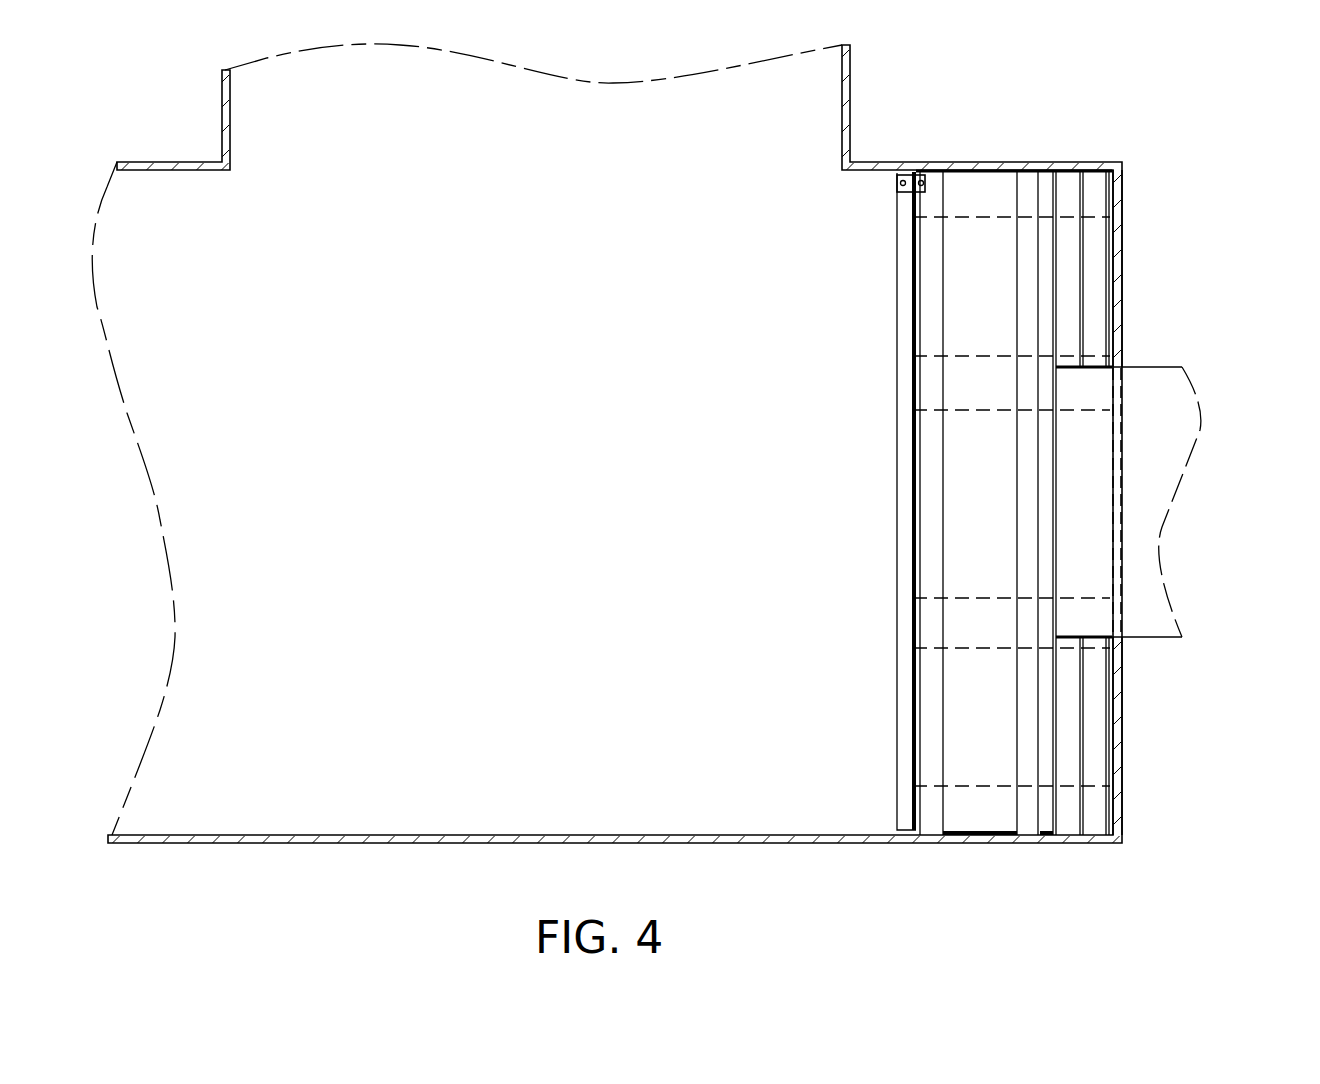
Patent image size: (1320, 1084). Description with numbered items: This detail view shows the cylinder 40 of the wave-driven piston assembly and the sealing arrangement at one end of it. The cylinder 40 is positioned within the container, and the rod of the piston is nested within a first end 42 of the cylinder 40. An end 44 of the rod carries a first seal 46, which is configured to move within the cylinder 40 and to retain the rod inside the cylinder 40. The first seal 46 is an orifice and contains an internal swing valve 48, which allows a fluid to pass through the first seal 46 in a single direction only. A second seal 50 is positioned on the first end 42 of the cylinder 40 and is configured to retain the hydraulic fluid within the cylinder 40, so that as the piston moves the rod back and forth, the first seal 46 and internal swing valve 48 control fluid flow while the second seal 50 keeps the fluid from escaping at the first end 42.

The cylinder 40 is at (447, 762).
The first end 42 is at (993, 840).
The end 44 is at (1145, 488).
The first seal 46 is at (995, 260).
The internal swing valve 48 is at (902, 365).
The second seal 50 is at (1087, 256).